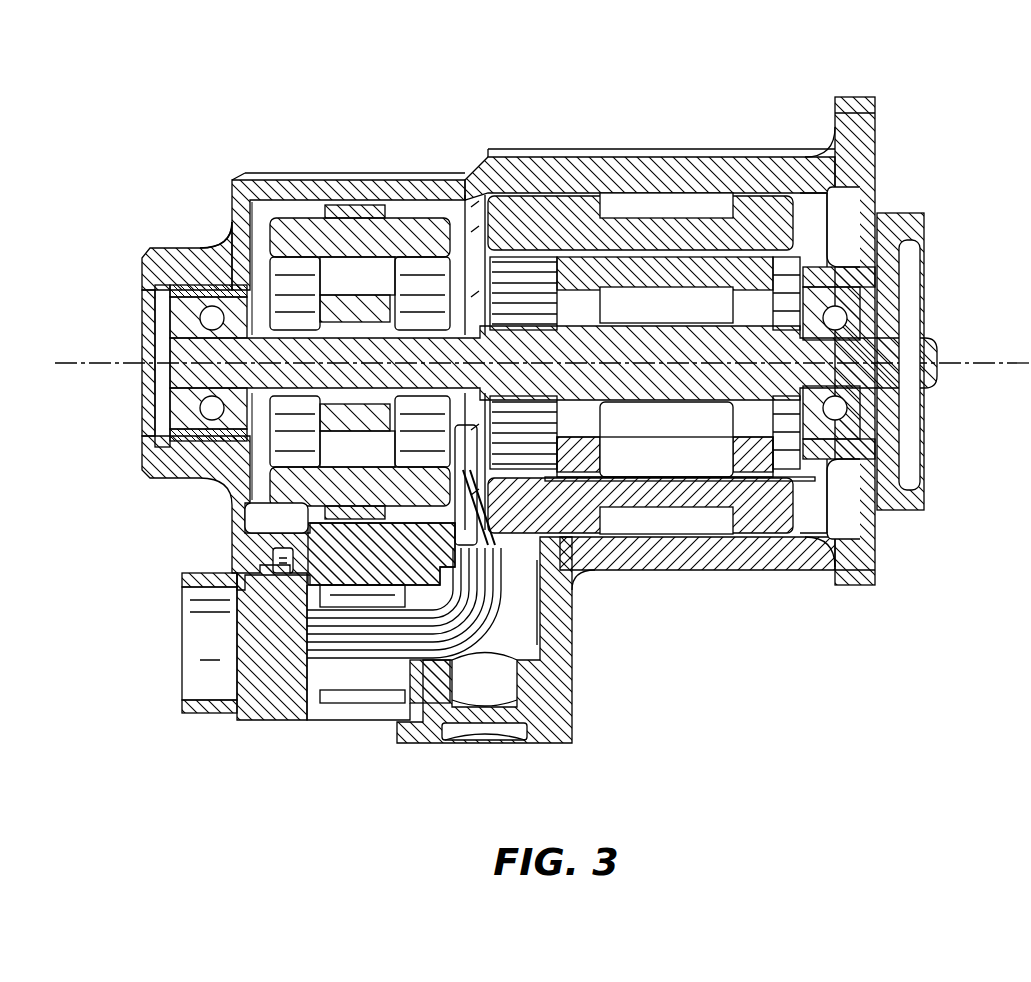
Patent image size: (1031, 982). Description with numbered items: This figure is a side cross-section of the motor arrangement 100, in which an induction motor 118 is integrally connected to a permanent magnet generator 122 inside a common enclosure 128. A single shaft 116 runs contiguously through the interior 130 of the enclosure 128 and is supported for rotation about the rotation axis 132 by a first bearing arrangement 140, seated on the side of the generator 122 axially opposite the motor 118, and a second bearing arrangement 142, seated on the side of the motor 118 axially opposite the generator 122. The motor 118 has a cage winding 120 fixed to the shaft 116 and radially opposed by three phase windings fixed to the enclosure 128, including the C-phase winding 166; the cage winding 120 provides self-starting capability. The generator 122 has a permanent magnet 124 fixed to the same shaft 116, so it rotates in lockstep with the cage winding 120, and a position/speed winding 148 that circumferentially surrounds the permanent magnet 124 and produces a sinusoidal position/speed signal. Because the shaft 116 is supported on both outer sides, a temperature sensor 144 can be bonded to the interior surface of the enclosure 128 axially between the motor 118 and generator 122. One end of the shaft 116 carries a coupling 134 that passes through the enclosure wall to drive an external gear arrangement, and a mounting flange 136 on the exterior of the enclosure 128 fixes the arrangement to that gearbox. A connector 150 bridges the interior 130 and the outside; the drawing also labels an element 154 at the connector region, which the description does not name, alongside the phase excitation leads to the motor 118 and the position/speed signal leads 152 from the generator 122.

The motor arrangement 100 is at (288, 772).
The shaft 116 is at (262, 345).
The motor 118 is at (690, 128).
The cage winding 120 is at (760, 262).
The generator 122 is at (368, 152).
The permanent magnet 124 is at (372, 298).
The enclosure 128 is at (707, 183).
The interior 130 is at (265, 518).
The rotation axis 132 is at (95, 365).
The coupling 134 is at (914, 316).
The mounting flange 136 is at (877, 130).
The first bearing arrangement 140 is at (165, 438).
The second bearing arrangement 142 is at (852, 408).
The temperature sensor 144 is at (477, 458).
The position/speed winding 148 is at (290, 488).
The connector 150 is at (265, 690).
The position/speed signal leads 152 is at (422, 615).
The terminal block 154 is at (370, 640).
The C-phase winding 166 is at (598, 275).